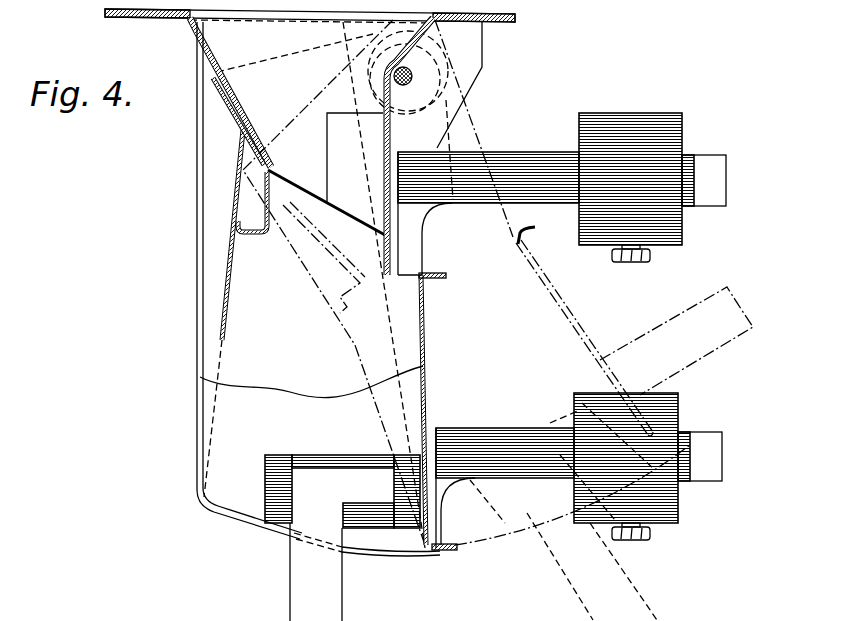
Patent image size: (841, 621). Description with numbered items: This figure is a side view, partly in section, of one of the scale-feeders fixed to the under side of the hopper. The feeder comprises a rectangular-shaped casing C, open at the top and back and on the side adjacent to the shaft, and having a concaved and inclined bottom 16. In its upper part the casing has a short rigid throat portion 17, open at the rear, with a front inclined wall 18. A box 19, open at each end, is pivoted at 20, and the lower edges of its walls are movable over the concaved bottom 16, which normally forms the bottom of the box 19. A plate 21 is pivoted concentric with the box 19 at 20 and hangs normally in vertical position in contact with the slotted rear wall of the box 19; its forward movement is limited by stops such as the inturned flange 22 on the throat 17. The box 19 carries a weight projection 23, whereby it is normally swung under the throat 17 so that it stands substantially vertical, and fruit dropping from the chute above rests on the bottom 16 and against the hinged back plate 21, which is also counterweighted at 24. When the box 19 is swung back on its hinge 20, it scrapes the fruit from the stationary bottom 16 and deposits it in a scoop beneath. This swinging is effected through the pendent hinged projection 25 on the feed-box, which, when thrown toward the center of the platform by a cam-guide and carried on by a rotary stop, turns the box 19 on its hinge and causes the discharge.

The casing C is at (196, 272).
The concaved and inclined bottom 16 is at (257, 531).
The throat portion 17 is at (350, 285).
The front inclined wall 18 is at (243, 118).
The box 19 is at (311, 398).
The pivot 20 is at (407, 84).
The plate 21 is at (391, 127).
The inturned flange 22 is at (384, 183).
The weight projection 23 is at (525, 478).
The counterweight 24 is at (567, 203).
The pendent hinged projection 25 is at (316, 572).